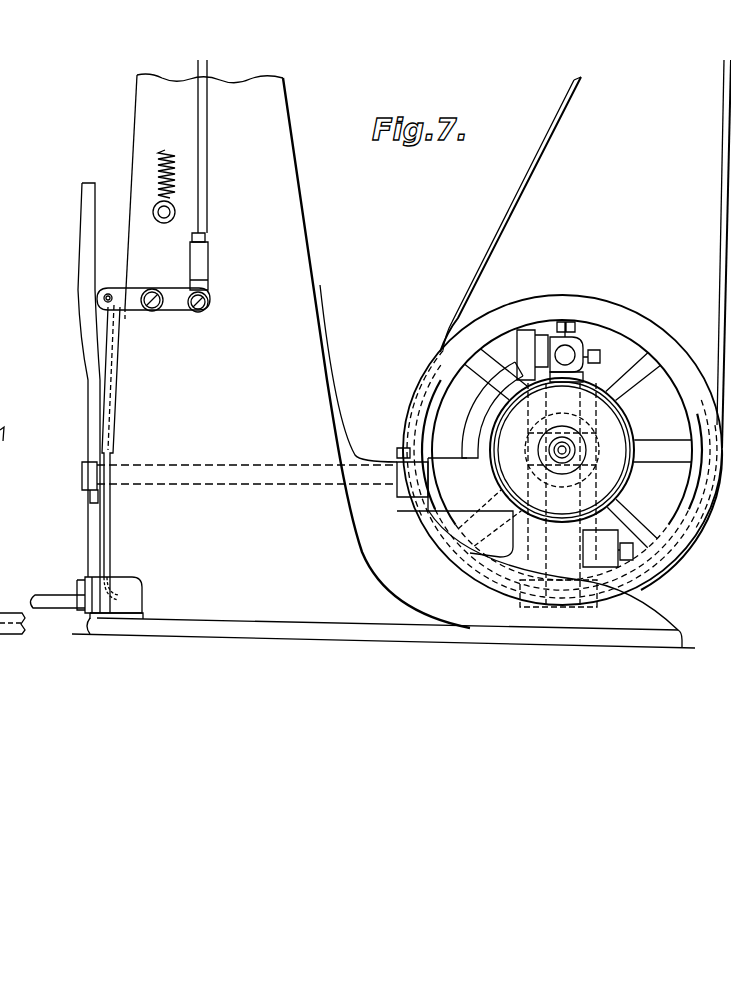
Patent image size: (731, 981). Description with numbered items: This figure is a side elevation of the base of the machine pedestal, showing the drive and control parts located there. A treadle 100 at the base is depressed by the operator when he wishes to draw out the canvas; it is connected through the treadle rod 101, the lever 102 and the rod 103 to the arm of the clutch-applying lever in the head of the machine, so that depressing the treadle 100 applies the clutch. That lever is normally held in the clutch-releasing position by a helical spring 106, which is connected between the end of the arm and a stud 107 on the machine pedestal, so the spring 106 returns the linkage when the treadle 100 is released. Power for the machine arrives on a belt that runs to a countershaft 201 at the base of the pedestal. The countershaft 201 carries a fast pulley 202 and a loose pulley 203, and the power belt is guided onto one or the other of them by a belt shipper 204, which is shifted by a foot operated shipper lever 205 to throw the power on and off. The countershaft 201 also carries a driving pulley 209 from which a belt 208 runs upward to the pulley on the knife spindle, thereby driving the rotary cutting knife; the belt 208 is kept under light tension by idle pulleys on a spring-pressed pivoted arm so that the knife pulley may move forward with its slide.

The treadle 100 is at (52, 586).
The treadle rod 101 is at (112, 349).
The lever 102 is at (178, 308).
The rod 103 is at (204, 218).
The helical spring 106 is at (165, 150).
The stud 107 is at (155, 204).
The countershaft 201 is at (500, 463).
The fast pulley 202 is at (614, 427).
The loose pulley 203 is at (632, 483).
The belt shipper 204 is at (495, 397).
The foot operated shipper lever 205 is at (87, 240).
The belt 208 is at (518, 205).
The driving pulley 209 is at (610, 288).